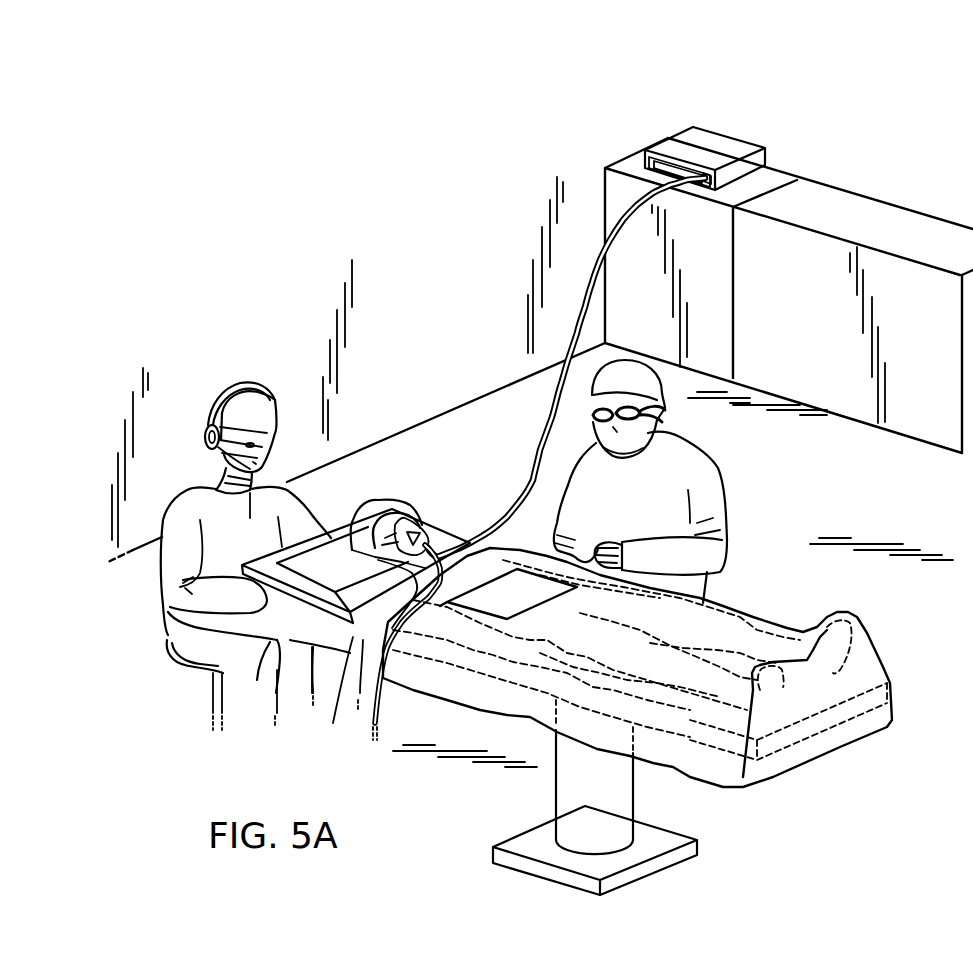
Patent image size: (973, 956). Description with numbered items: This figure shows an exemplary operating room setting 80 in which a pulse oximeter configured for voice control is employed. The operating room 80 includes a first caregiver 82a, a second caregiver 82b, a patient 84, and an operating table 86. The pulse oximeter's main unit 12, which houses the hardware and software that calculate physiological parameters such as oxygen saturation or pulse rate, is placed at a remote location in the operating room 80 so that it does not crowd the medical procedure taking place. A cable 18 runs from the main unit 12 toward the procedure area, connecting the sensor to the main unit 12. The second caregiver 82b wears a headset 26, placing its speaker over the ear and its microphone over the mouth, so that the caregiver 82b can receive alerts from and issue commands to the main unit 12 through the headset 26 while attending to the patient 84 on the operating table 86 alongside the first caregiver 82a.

The main unit 12 is at (655, 140).
The cable 18 is at (540, 447).
The headset 26 is at (222, 412).
The operating room setting 80 is at (181, 364).
The first caregiver 82a is at (700, 453).
The second caregiver 82b is at (175, 503).
The patient 84 is at (356, 632).
The operating table 86 is at (847, 732).